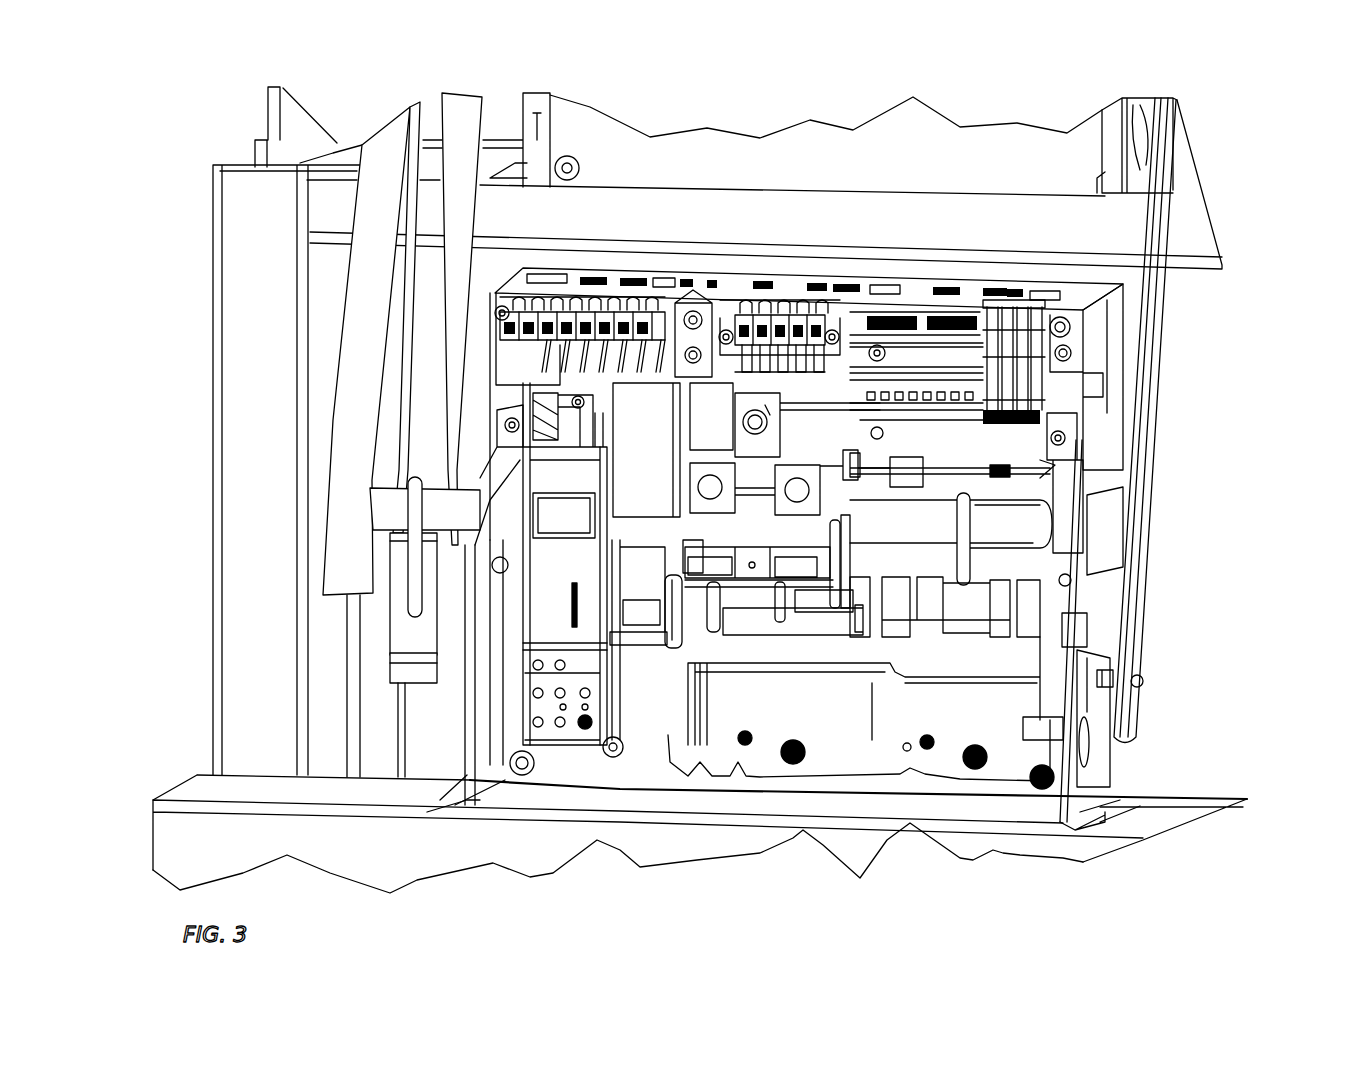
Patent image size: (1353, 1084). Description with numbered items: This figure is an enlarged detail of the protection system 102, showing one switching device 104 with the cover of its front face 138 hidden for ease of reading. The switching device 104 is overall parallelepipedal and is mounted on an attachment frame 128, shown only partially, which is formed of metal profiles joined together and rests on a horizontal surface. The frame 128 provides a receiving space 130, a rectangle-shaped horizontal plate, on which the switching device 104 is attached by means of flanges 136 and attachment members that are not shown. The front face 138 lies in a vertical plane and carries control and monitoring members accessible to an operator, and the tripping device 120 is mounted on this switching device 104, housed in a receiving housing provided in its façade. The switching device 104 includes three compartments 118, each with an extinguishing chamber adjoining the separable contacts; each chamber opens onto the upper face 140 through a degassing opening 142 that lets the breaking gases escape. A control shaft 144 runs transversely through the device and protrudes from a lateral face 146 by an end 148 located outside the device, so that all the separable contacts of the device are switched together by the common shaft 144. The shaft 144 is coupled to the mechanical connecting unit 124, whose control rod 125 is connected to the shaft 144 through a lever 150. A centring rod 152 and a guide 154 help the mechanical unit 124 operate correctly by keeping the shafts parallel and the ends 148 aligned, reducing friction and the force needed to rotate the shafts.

The protection system 102 is at (703, 499).
The switching device 104 is at (1097, 323).
The compartments 118 is at (1000, 752).
The tripping device 120 is at (557, 603).
The mechanical connecting unit 124 is at (256, 655).
The control rod 125 is at (415, 653).
The attachment frame 128 is at (253, 196).
The receiving space 130 is at (1162, 808).
The flanges 136 is at (1097, 760).
The front face 138 is at (1037, 440).
The upper face 140 is at (1092, 285).
The degassing opening 142 is at (962, 292).
The control shaft 144 is at (1030, 545).
The lateral face 146 is at (483, 350).
The end of the shaft 148 is at (385, 507).
The lever 150 is at (403, 548).
The centring rod 152 is at (367, 397).
The guide 154 is at (1138, 647).